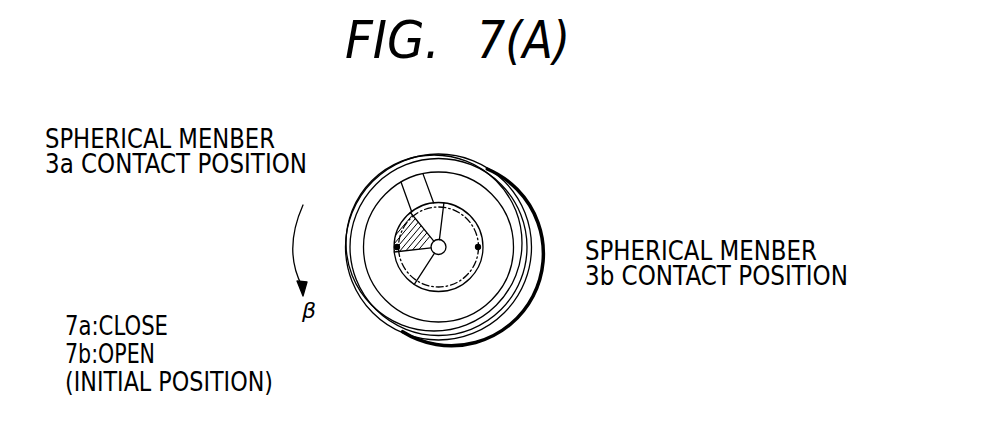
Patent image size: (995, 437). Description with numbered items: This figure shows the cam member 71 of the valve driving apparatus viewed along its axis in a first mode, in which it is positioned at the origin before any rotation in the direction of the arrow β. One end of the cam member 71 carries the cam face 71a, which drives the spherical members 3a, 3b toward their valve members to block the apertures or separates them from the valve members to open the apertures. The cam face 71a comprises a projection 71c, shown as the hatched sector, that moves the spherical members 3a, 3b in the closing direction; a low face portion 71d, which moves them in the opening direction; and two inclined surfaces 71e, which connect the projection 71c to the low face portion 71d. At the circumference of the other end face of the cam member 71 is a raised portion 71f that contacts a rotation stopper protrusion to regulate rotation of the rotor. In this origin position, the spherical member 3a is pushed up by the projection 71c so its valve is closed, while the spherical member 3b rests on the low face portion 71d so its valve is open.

The cam member 71 is at (483, 236).
The cam face 71a is at (462, 226).
The projection 71c is at (400, 220).
The low face portion 71d is at (456, 273).
The inclined surfaces 71e is at (437, 212).
The raised portion 71f is at (415, 182).
The spherical member 3a is at (396, 246).
The spherical member 3b is at (583, 258).